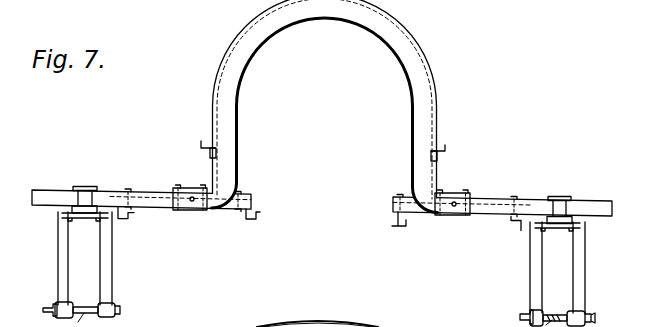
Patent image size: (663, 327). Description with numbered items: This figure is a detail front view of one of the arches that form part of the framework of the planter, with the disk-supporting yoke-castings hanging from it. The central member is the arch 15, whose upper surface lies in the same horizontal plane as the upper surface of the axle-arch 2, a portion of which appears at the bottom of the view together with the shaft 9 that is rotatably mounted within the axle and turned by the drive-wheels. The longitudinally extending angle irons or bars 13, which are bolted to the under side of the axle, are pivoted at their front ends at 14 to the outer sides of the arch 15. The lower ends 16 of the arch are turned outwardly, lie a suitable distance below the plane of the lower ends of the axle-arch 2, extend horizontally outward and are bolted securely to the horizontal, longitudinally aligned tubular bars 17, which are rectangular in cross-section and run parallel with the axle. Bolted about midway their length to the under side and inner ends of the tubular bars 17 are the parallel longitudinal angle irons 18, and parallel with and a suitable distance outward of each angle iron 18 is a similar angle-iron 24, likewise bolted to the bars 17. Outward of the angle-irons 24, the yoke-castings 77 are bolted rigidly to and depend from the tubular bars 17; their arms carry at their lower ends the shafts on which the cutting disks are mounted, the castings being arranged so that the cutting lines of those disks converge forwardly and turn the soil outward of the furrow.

The axle-arch 2 is at (317, 314).
The shaft 9 is at (27, 300).
The angle irons 13 is at (201, 145).
The pivot 14 is at (210, 155).
The arch 15 is at (325, 106).
The lower outwardly-turned ends 16 is at (321, 212).
The tubular bars 17 is at (50, 190).
The angle irons 18 is at (324, 225).
The angle-iron 24 is at (128, 218).
The yoke-castings 77 is at (320, 250).